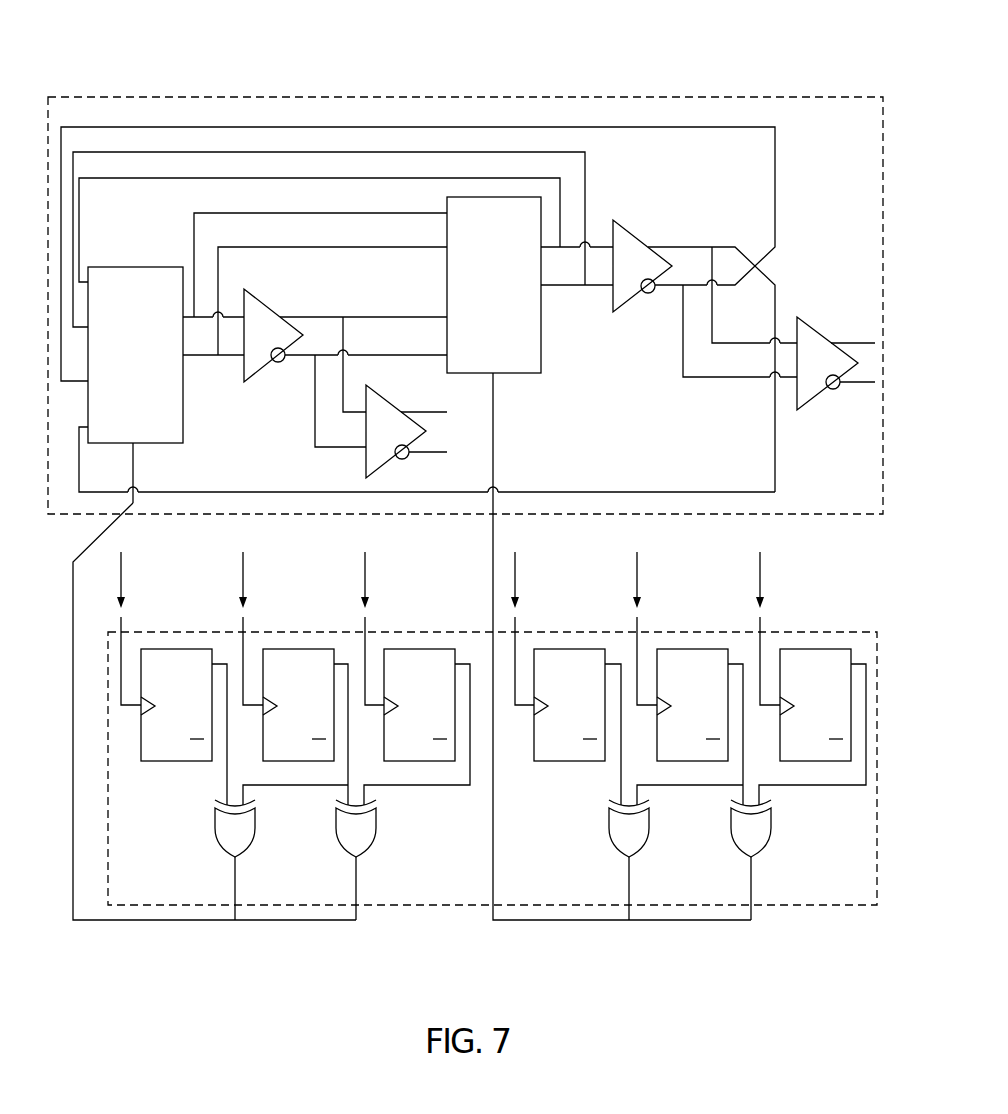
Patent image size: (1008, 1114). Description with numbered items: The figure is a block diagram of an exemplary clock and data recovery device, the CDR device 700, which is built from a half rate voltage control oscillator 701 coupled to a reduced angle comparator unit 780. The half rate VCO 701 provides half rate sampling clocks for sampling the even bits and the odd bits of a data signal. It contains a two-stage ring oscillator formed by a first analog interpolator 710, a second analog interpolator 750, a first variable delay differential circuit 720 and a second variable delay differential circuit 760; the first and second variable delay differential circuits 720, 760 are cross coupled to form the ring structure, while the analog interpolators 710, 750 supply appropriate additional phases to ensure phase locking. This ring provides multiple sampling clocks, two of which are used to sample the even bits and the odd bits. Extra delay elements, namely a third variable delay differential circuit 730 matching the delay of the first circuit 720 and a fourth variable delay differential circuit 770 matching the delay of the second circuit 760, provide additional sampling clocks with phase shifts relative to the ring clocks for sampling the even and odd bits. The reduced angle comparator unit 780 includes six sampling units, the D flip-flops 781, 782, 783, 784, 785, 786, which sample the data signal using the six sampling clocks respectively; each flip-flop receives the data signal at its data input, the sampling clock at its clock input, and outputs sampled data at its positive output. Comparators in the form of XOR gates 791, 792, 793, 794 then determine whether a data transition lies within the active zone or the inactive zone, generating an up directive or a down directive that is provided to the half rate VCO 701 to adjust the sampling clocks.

The CDR device 700 is at (746, 40).
The half rate voltage control oscillator 701 is at (770, 97).
The first analog interpolator 710 is at (183, 413).
The first variable delay differential circuit 720 is at (262, 300).
The third variable delay differential circuit 730 is at (384, 398).
The second analog interpolator 750 is at (447, 266).
The second variable delay differential circuit 760 is at (628, 231).
The fourth variable delay differential circuit 770 is at (808, 325).
The reduced angle comparator unit 780 is at (443, 905).
The D flip-flop 781 is at (185, 762).
The D flip-flop 782 is at (296, 762).
The D flip-flop 783 is at (416, 762).
The D flip-flop 784 is at (574, 762).
The D flip-flop 785 is at (716, 762).
The D flip-flop 786 is at (827, 762).
The XOR gate 791 is at (215, 833).
The XOR gate 792 is at (336, 833).
The XOR gate 793 is at (609, 833).
The XOR gate 794 is at (731, 833).